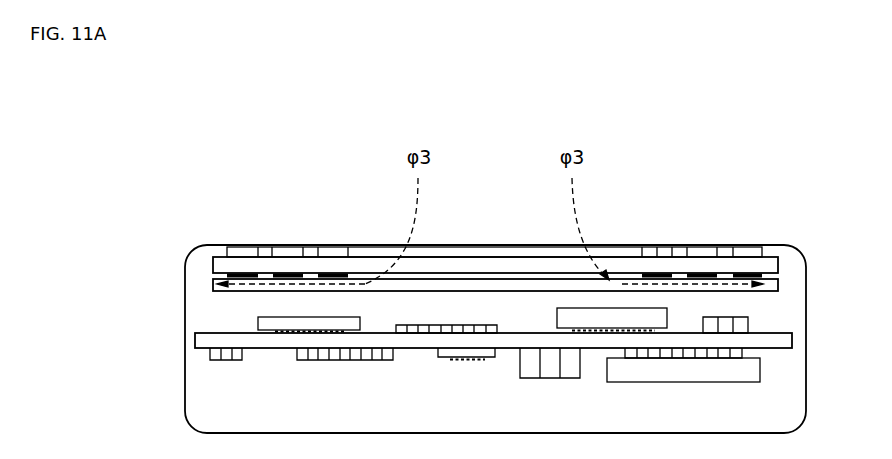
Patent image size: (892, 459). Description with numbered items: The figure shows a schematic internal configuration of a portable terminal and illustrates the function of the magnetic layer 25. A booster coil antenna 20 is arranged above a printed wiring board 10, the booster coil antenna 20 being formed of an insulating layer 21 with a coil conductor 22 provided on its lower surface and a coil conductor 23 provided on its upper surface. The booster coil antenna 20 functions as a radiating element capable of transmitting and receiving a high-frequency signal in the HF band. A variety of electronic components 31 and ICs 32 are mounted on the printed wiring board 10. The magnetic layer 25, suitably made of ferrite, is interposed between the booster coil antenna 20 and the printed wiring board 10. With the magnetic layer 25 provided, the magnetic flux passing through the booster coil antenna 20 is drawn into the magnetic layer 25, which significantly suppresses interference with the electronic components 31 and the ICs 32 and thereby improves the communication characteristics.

The printed wiring board 10 is at (416, 349).
The booster coil antenna 20 is at (371, 257).
The insulating layer 21 is at (618, 257).
The coil conductor 22 is at (288, 277).
The coil conductor 23 is at (288, 251).
The magnetic layer 25 is at (463, 282).
The electronic component 31 is at (483, 325).
The IC 32 is at (572, 308).